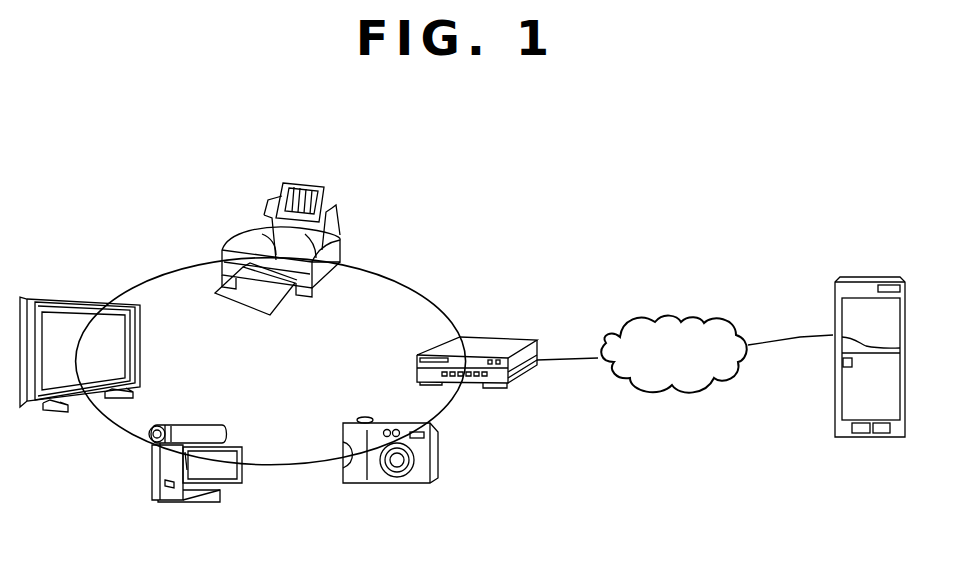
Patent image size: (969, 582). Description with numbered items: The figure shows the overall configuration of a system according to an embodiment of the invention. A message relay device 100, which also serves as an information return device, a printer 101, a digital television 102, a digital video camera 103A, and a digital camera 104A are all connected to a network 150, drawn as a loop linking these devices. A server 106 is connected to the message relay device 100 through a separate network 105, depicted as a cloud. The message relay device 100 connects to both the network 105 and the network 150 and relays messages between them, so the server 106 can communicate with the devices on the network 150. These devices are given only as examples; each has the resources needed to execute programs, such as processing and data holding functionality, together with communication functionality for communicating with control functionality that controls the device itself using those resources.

The message relay device 100 is at (517, 337).
The printer 101 is at (308, 182).
The digital television 102 is at (67, 298).
The digital video camera 103A is at (192, 503).
The digital camera 104A is at (377, 487).
The network 105 is at (703, 315).
The server 106 is at (875, 278).
The network 150 is at (415, 287).